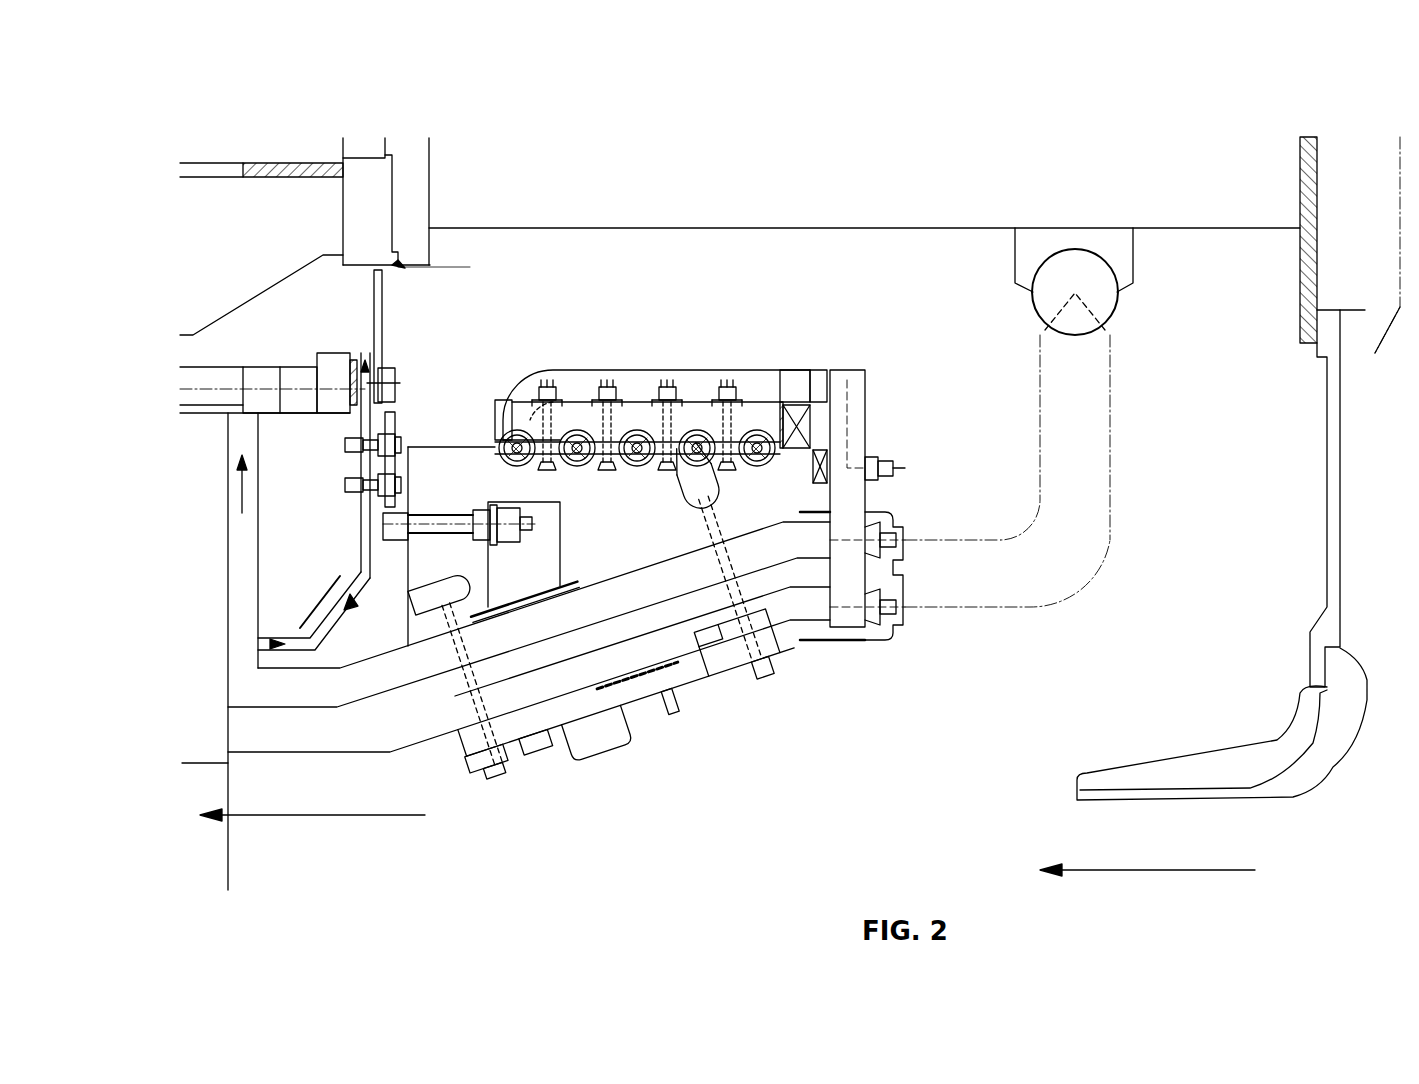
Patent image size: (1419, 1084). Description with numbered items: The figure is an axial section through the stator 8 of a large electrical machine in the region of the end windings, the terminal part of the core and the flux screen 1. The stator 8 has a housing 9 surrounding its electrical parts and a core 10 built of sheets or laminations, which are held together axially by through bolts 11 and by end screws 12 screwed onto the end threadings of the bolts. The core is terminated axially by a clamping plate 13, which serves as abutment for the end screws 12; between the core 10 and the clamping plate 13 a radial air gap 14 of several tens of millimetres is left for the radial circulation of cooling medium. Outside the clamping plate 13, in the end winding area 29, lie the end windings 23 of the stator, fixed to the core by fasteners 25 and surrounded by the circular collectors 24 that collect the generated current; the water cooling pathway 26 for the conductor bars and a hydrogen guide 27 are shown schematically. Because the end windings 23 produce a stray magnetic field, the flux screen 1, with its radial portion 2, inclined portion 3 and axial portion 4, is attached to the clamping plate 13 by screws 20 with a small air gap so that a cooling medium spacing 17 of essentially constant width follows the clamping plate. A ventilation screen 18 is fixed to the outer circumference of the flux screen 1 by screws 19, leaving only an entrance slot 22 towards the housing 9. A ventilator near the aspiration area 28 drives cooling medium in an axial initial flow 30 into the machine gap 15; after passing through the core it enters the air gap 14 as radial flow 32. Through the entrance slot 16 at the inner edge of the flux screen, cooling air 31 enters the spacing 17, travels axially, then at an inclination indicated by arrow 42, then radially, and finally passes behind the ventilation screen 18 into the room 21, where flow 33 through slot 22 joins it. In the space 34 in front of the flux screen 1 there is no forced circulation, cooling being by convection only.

The flux screen 1 is at (370, 465).
The radial portion of flux screen 2 is at (370, 542).
The inclined portion of flux screen 3 is at (345, 617).
The axial portion of flux screen 4 is at (292, 650).
The stator 8 is at (200, 261).
The housing 9 is at (313, 200).
The core 10 is at (84, 495).
The through bolts 11 is at (263, 383).
The end screws 12 is at (333, 365).
The clamping plate 13 is at (288, 528).
The air gap 14 is at (242, 553).
The machine gap 15 is at (288, 792).
The entrance slot 16 is at (260, 648).
The spacing 17 is at (310, 630).
The ventilation screen 18 is at (380, 310).
The screws 19 is at (385, 380).
The screws 20 is at (397, 435).
The room 21 is at (302, 315).
The entrance slot 22 is at (378, 258).
The end windings 23 is at (688, 637).
The circular collectors 24 is at (637, 415).
The fasteners 25 is at (455, 524).
The water cooling pathway 26 is at (981, 357).
The hydrogen guide 27 is at (1358, 393).
The ventilator aspiration area 28 is at (1320, 871).
The end winding area 29 is at (1118, 686).
The axial initial flow 30 is at (342, 816).
The cooling air entrance 31 is at (245, 637).
The radial flow 32 is at (238, 490).
The cooling medium entrance 33 is at (450, 265).
The space in front of flux screen 34 is at (450, 555).
The inclined flow arrow 42 is at (318, 630).